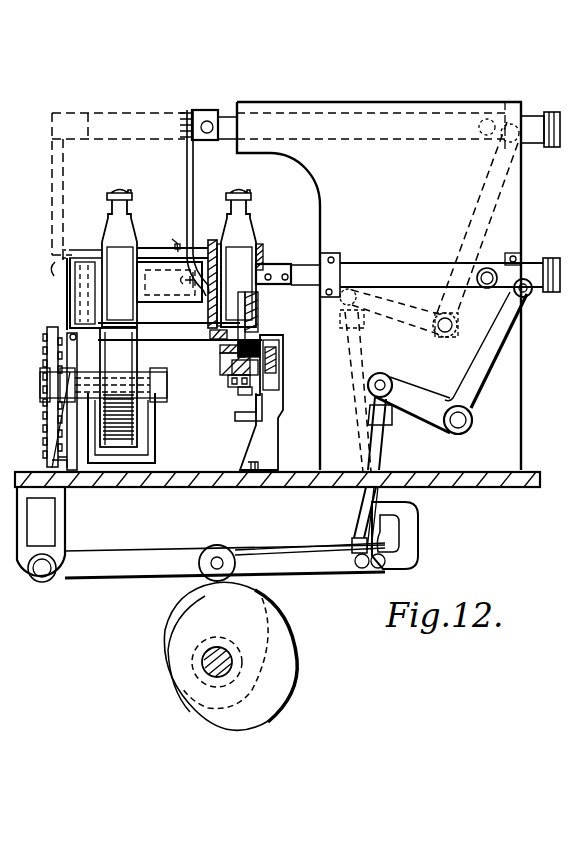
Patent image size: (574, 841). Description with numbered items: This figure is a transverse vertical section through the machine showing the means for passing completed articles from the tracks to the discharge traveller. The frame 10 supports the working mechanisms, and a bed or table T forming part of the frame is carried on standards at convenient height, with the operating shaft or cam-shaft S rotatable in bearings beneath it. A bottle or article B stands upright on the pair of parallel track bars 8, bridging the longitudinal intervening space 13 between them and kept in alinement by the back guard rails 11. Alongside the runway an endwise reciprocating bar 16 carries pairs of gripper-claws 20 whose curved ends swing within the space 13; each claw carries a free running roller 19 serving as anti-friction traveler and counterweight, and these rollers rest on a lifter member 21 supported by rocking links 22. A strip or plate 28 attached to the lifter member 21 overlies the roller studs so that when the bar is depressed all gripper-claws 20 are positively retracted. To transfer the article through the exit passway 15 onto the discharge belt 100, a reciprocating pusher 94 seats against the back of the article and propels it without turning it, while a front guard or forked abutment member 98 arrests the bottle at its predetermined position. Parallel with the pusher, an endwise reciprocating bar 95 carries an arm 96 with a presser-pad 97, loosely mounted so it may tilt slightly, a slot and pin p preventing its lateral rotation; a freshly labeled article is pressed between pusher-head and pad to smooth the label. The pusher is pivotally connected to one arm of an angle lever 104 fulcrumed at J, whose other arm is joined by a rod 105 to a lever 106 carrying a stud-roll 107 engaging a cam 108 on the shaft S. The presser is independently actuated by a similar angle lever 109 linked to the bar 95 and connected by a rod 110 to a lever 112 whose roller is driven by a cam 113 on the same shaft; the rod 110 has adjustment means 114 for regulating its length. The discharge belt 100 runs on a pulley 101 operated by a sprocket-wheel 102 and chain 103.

The endwise reciprocating bar 95 is at (223, 142).
The arm 96 is at (189, 190).
The bottle or article B is at (179, 259).
The presser-pad 97 is at (92, 250).
The front guard or forked abutment member 98 is at (72, 300).
The slot and pin p is at (172, 243).
The back guard rails 11 is at (263, 266).
The exit passway 15 is at (169, 295).
The reciprocating pusher 94 is at (402, 278).
The gripper-claws 20 is at (252, 319).
The track bars 8 is at (137, 326).
The longitudinal intervening space 13 is at (226, 335).
The strip or plate 28 is at (238, 344).
The free running roller 19 is at (240, 366).
The lifter member 21 is at (246, 381).
The rocking links 22 is at (253, 408).
The endwise reciprocating bar 16 is at (280, 350).
The discharge belt 100 is at (138, 362).
The pulley 101 is at (138, 350).
The sprocket-wheel 102 is at (38, 397).
The chain 103 is at (22, 378).
The rod 110 is at (353, 361).
The angle lever 109 is at (480, 196).
The fulcrum J is at (464, 425).
The angle lever 104 is at (500, 330).
The rod 105 is at (372, 452).
The bed or table T is at (204, 487).
The frame 10 is at (41, 534).
The lever 106 is at (156, 558).
The stud-roll 107 is at (217, 556).
The lever 112 is at (290, 560).
The adjustment means 114 is at (410, 535).
The cam 108 is at (292, 654).
The cam 113 is at (166, 650).
The operating shaft S is at (210, 668).